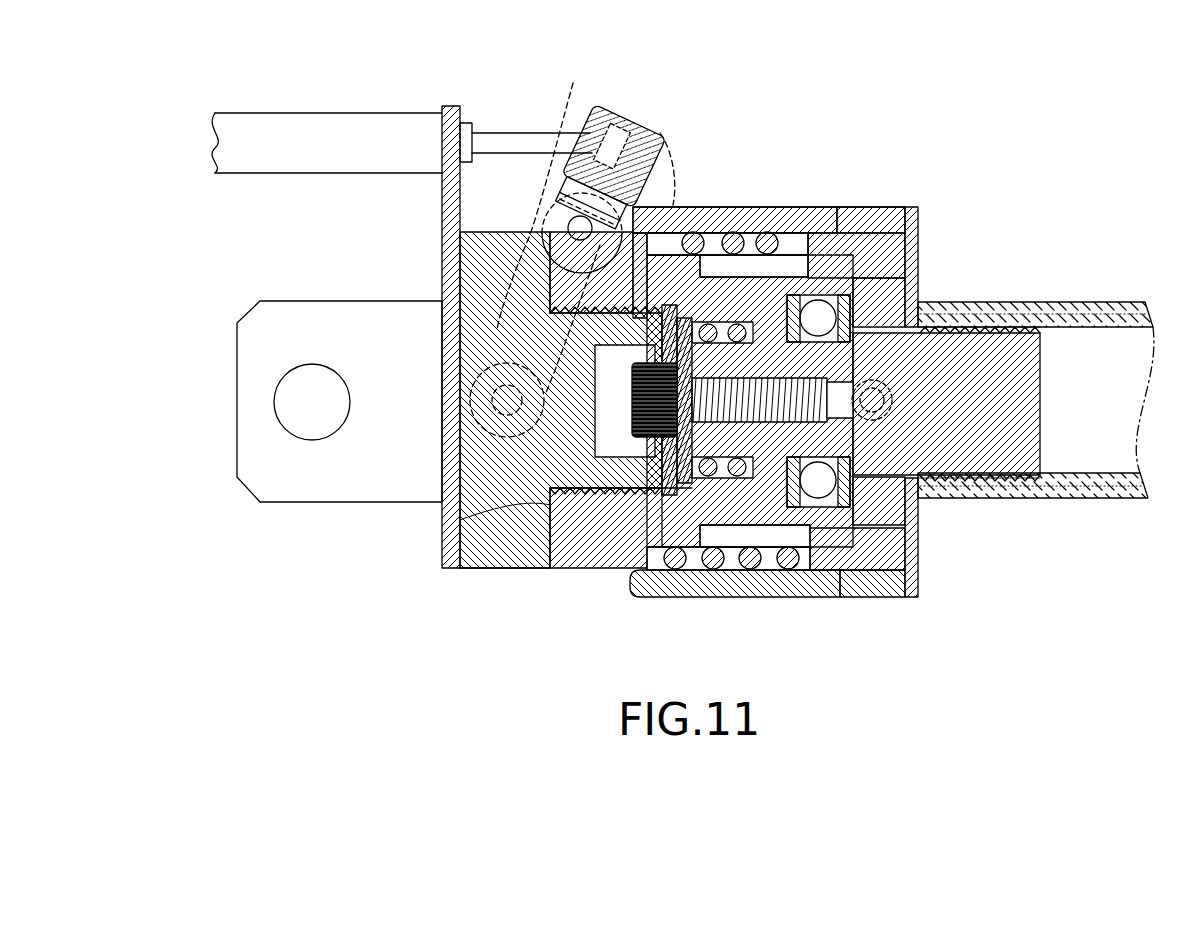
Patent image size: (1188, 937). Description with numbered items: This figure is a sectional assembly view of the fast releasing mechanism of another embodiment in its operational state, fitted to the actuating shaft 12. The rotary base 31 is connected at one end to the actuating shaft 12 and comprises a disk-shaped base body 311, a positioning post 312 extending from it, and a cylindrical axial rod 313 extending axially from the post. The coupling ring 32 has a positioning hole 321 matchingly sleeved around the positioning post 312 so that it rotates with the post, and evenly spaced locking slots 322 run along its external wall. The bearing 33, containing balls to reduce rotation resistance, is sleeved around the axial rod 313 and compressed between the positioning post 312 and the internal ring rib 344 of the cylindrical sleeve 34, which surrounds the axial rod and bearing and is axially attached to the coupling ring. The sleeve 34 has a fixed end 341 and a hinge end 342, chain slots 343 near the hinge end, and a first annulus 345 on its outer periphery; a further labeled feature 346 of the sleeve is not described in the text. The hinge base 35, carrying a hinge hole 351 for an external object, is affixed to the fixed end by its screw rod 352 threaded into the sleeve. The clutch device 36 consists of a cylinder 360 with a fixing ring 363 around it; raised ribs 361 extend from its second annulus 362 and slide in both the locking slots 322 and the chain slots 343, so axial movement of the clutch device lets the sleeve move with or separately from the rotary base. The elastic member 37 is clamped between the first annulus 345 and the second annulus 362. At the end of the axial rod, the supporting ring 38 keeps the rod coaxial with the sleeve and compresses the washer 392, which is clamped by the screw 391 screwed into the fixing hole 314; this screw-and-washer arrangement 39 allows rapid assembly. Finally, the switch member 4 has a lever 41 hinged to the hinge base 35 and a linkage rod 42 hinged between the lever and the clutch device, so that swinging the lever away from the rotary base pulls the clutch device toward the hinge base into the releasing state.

The switch member 4 is at (572, 224).
The lever 41 is at (647, 52).
The linkage rod 42 is at (636, 112).
The actuating shaft 12 is at (1085, 310).
The rotary base 31 is at (836, 375).
The base body 311 is at (918, 232).
The positioning post 312 is at (918, 507).
The axial rod 313 is at (735, 252).
The fixing hole 314 is at (680, 248).
The coupling ring 32 is at (882, 302).
The positioning hole 321 is at (853, 357).
The locking slots 322 is at (923, 257).
The bearing 33 is at (768, 236).
The sleeve 34 is at (513, 438).
The fixed end 341 is at (527, 570).
The hinge end 342 is at (890, 540).
The chain slots 343 is at (770, 553).
The internal ring rib 344 is at (817, 537).
The first annulus 345 is at (597, 537).
The thread 346 is at (540, 467).
The hinge base 35 is at (490, 228).
The hinge hole 351 is at (290, 396).
The screw rod 352 is at (620, 515).
The clutch device 36 is at (769, 159).
The cylinder 360 is at (783, 215).
The raised ribs 361 is at (907, 540).
The second annulus 362 is at (873, 593).
The fixing ring 363 is at (871, 182).
The elastic member 37 is at (712, 568).
The supporting ring 38 is at (753, 530).
The rotating body 39 is at (839, 434).
The screw 391 is at (850, 593).
The washer 392 is at (672, 565).